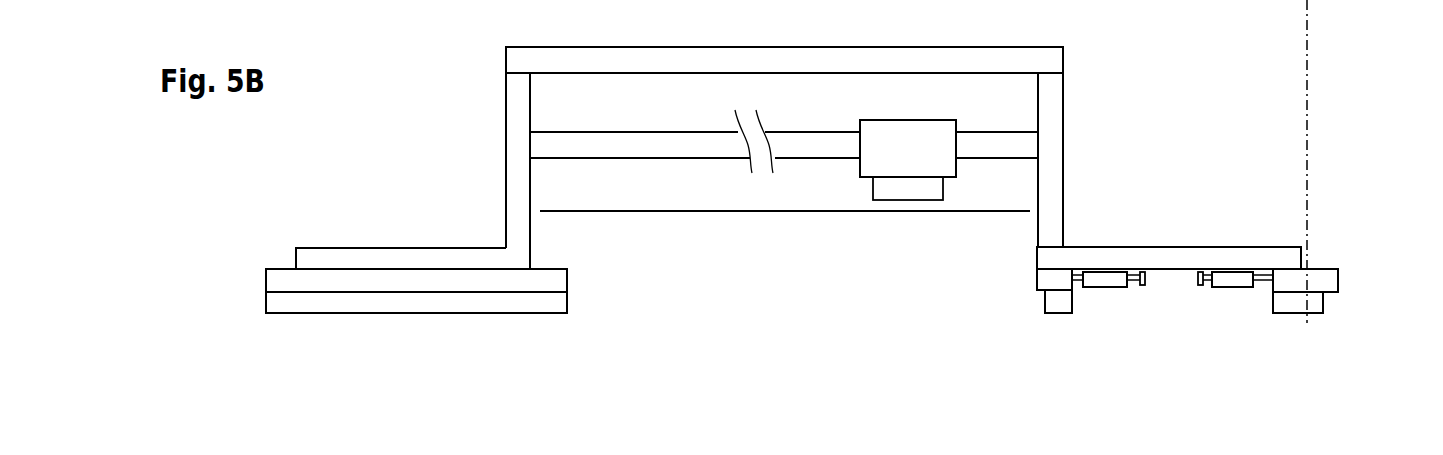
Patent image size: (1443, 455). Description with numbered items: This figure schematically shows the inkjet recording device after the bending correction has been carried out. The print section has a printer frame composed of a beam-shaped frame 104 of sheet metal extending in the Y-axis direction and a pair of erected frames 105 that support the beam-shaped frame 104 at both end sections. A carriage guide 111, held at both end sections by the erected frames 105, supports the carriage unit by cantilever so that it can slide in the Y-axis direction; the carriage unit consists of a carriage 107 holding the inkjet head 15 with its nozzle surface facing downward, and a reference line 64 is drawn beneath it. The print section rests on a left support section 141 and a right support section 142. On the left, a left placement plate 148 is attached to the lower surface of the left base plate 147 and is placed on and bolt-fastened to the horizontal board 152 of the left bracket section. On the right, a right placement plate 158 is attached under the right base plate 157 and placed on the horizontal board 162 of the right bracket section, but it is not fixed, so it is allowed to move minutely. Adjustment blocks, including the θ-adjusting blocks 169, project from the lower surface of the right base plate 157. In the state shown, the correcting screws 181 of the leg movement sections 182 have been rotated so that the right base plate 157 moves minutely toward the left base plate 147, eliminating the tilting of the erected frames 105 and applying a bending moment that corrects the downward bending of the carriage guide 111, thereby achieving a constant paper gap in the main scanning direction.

The beam-shaped frame 104 is at (604, 58).
The erected frame 105 is at (514, 105).
The carriage guide 111 is at (657, 160).
The carriage 107 is at (876, 164).
The inkjet head 15 is at (913, 192).
The reference line 64 is at (1000, 212).
The left base plate 147 is at (300, 258).
The left placement plate 148 is at (275, 282).
The horizontal board 152 is at (272, 306).
The right base plate 157 is at (1297, 257).
The right placement plate 158 is at (1327, 280).
The horizontal board 162 is at (1320, 302).
The θ-adjusting block 169 is at (1242, 281).
The correcting screw 181 is at (1200, 285).
The left support section 141 is at (388, 126).
The right support section 142 is at (1226, 206).
The leg movement section 182 is at (1168, 20).